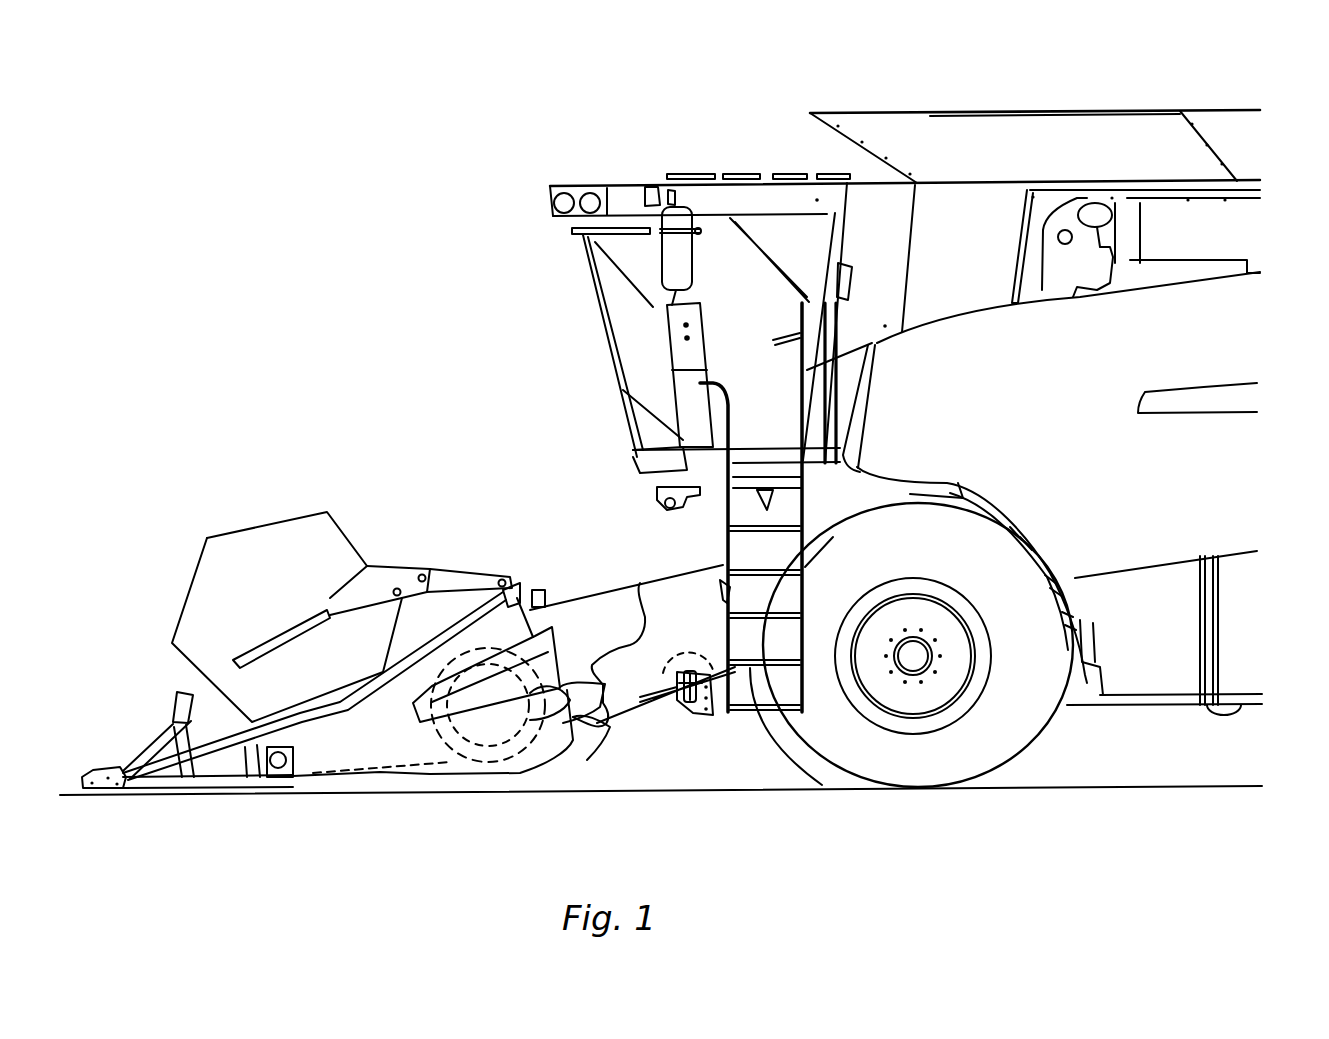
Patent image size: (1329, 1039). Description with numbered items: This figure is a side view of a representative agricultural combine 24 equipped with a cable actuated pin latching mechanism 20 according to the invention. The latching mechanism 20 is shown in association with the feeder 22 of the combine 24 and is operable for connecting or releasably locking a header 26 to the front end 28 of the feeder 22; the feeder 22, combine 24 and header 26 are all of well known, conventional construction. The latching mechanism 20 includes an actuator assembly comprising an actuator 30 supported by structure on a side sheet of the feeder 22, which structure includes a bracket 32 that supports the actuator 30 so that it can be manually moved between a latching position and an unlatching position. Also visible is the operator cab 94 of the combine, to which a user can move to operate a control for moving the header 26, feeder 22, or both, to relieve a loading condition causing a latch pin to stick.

The cable actuated pin latching mechanism 20 is at (673, 711).
The feeder 22 is at (612, 593).
The agricultural combine 24 is at (1260, 98).
The header 26 is at (402, 570).
The front end 28 is at (592, 728).
The actuator 30 is at (692, 712).
The bracket 32 is at (713, 700).
The operator cab 94 is at (595, 281).